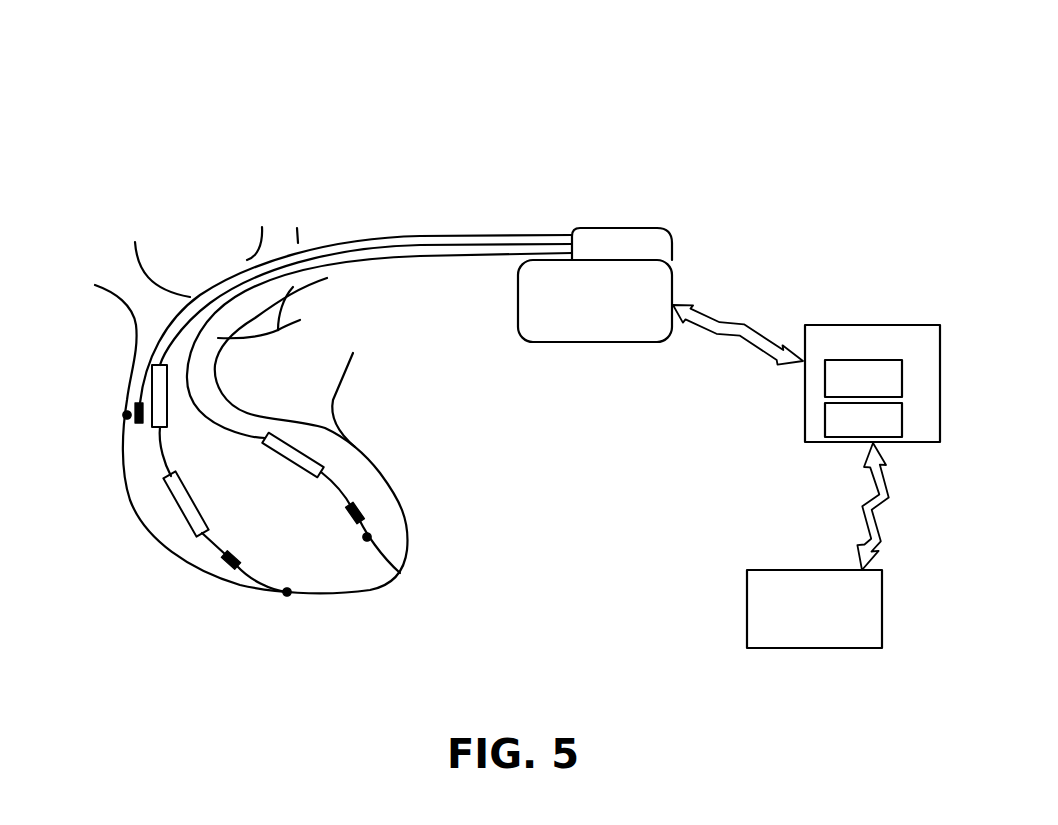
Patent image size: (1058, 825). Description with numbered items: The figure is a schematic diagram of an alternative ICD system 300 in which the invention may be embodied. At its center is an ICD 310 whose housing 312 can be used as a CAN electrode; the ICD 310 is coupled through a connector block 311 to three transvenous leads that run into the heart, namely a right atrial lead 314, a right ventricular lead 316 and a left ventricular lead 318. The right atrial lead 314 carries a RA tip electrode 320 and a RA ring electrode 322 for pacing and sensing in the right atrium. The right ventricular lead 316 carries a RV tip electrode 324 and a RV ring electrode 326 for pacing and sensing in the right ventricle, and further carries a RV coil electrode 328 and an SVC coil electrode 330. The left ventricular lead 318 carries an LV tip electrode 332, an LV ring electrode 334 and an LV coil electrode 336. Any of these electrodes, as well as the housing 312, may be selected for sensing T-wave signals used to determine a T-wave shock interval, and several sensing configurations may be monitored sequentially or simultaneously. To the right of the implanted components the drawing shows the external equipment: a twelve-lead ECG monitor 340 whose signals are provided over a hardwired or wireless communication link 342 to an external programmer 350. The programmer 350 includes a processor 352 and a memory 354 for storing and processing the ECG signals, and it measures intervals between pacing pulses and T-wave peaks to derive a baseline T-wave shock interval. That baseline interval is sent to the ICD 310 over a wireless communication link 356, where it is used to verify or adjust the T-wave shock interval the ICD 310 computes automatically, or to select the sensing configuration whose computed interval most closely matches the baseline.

The ICD system 300 is at (507, 155).
The ICD 310 is at (643, 285).
The connector block 311 is at (611, 228).
The housing 312 is at (595, 342).
The right atrial lead 314 is at (400, 235).
The right ventricular lead 316 is at (393, 247).
The left ventricular lead 318 is at (483, 258).
The RA tip electrode 320 is at (125, 415).
The RA ring electrode 322 is at (143, 430).
The RV tip electrode 324 is at (290, 593).
The RV ring electrode 326 is at (224, 566).
The RV coil electrode 328 is at (171, 497).
The SVC coil electrode 330 is at (152, 380).
The LV tip electrode 332 is at (400, 573).
The LV ring electrode 334 is at (362, 513).
The LV coil electrode 336 is at (318, 457).
The 12-lead ECG monitor 340 is at (778, 640).
The communication link 342 is at (887, 532).
The external programmer 350 is at (838, 325).
The processor 352 is at (825, 377).
The memory 354 is at (837, 437).
The wireless communication link 356 is at (750, 332).